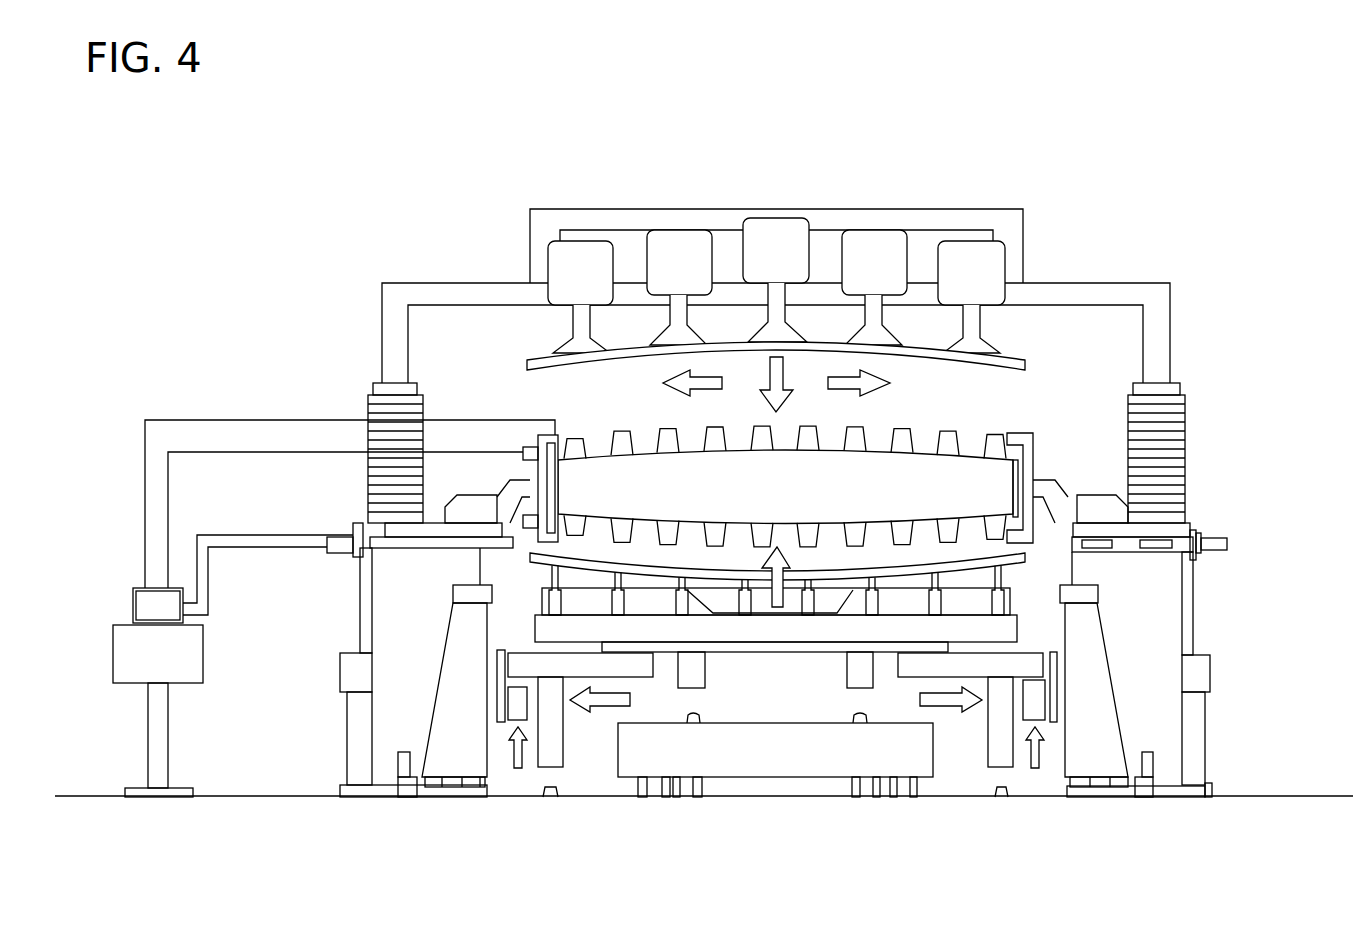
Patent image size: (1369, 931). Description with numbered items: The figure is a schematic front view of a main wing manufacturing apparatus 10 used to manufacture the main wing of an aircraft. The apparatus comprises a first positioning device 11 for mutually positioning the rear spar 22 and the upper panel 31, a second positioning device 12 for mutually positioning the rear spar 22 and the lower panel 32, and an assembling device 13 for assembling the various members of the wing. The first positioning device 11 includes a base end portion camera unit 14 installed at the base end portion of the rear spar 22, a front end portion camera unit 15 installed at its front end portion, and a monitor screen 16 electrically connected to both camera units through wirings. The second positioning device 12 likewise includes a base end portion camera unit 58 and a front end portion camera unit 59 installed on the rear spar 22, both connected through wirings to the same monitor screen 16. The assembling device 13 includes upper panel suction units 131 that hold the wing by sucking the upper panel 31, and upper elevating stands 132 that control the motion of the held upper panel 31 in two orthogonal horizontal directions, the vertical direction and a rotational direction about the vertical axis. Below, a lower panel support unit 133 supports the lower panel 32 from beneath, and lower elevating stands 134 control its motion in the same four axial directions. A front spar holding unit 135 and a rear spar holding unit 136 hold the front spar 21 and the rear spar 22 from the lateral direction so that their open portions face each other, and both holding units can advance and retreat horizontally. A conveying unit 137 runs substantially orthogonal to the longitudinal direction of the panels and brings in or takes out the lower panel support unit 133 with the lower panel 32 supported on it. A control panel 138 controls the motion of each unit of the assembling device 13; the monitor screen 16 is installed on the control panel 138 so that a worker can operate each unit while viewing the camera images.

The main wing manufacturing apparatus 10 is at (1130, 212).
The first positioning device 11 is at (490, 405).
The second positioning device 12 is at (290, 556).
The assembling device 13 is at (1218, 470).
The base end portion camera unit 14 is at (562, 458).
The front end portion camera unit 15 is at (530, 458).
The monitor screen 16 is at (133, 605).
The front spar 21 is at (1035, 450).
The rear spar 22 is at (582, 457).
The upper panel 31 is at (1000, 366).
The lower panel 32 is at (1010, 568).
The base end portion camera unit 58 is at (560, 517).
The front end portion camera unit 59 is at (527, 533).
The upper panel suction units 131 is at (838, 222).
The upper elevating stands 132 is at (350, 385).
The lower panel support unit 133 is at (766, 652).
The lower elevating stands 134 is at (494, 778).
The front spar holding unit 135 is at (1090, 483).
The rear spar holding unit 136 is at (472, 497).
The conveying unit 137 is at (771, 785).
The control panel 138 is at (188, 730).